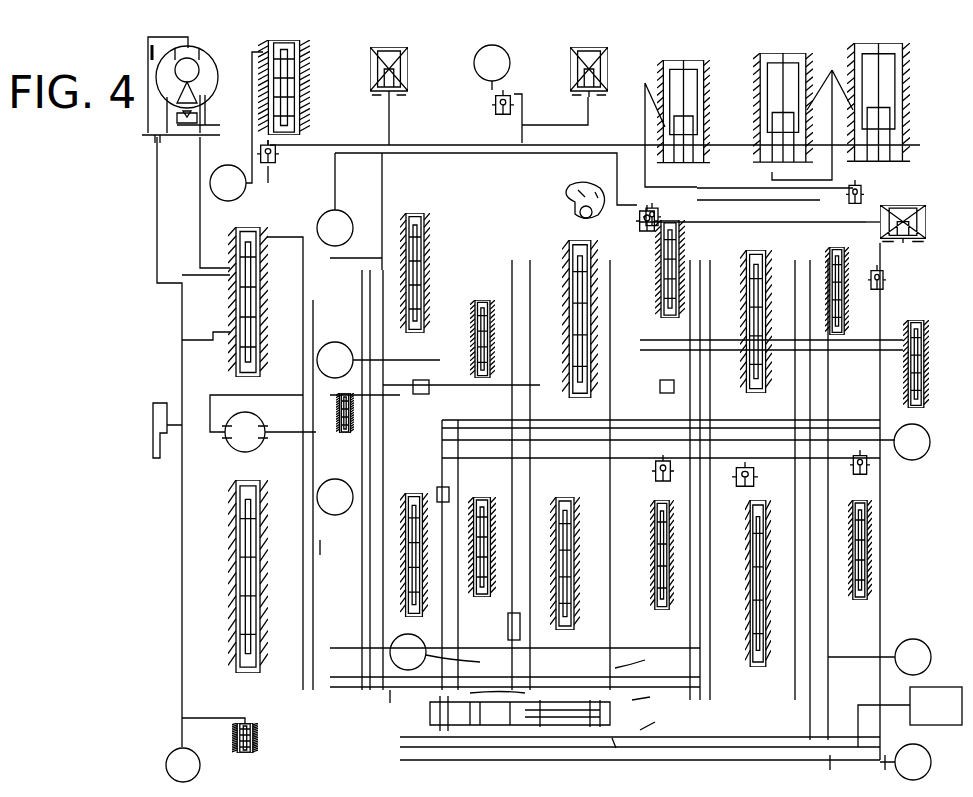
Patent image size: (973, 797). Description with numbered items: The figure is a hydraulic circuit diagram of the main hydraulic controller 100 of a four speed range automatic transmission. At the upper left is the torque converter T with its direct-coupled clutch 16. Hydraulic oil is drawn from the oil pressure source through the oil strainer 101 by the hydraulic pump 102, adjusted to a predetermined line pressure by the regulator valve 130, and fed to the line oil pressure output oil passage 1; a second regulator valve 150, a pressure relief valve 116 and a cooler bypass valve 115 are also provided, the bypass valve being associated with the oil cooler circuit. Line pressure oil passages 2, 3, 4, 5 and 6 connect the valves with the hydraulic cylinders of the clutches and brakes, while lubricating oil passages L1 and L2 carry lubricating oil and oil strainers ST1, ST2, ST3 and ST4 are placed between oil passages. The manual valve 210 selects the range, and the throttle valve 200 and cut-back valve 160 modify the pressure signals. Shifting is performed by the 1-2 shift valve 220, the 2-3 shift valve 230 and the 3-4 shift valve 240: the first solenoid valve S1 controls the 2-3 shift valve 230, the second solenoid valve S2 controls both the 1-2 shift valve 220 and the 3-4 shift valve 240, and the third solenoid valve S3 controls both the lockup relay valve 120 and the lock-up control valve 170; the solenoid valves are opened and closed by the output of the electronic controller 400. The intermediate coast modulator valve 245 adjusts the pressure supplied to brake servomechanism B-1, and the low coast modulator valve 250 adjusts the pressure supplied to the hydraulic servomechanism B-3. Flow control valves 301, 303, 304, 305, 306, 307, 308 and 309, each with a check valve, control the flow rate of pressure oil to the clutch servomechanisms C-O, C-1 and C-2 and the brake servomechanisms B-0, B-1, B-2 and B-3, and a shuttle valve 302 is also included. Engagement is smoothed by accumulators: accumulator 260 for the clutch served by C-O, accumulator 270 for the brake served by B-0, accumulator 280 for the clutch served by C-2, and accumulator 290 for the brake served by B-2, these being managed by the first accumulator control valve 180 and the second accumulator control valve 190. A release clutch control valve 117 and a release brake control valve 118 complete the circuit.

The direct-coupled clutch 16 is at (151, 53).
The torque converter T is at (212, 58).
The main hydraulic controller 100 is at (147, 143).
The accumulator 260 is at (310, 76).
The third solenoid valve S3 is at (410, 55).
The hydraulic servomechanism B-1 is at (492, 67).
The flow control valve 307 is at (515, 106).
The first solenoid valve S1 is at (608, 55).
The accumulator 270 is at (722, 60).
The accumulator 280 is at (810, 72).
The accumulator 290 is at (903, 72).
The flow control valve 306 is at (655, 207).
The flow control valve 304 is at (864, 193).
The second solenoid valve S2 is at (927, 222).
The flow control valve 301 is at (279, 155).
The hydraulic servomechanism C-O is at (228, 183).
The lockup relay valve 120 is at (268, 228).
The hydraulic servomechanism B-0 is at (335, 228).
The second regulator valve 150 is at (428, 224).
The cut-back valve 160 is at (484, 296).
The throttle valve 200 is at (562, 252).
The flow control valve 305 is at (606, 268).
The 3-4 shift valve 240 is at (678, 232).
The 2-3 shift valve 230 is at (744, 255).
The intermediate coast modulator valve 245 is at (833, 251).
The flow control valve 309 is at (886, 279).
The low coast modulator valve 250 is at (924, 332).
The lubricating oil passage L1 is at (335, 360).
The oil strainer ST4 is at (427, 398).
The oil strainer ST2 is at (672, 398).
The hydraulic servomechanism B-2 is at (912, 442).
The hydraulic pump 102 is at (245, 432).
The oil strainer 101 is at (160, 460).
The pressure relief valve 116 is at (326, 420).
The hydraulic servomechanism C-2 is at (335, 497).
The lock-up control valve 170 is at (402, 508).
The oil strainer ST3 is at (465, 483).
The flow control valve 303 is at (662, 485).
The shuttle valve 302 is at (758, 475).
The flow control valve 308 is at (870, 465).
The first accumulator control valve 180 is at (484, 600).
The second accumulator control valve 190 is at (560, 600).
The release brake control valve 118 is at (660, 612).
The release clutch control valve 117 is at (872, 580).
The hydraulic servomechanism C-1 is at (435, 652).
The oil strainer ST1 is at (492, 663).
The regulator valve 130 is at (230, 652).
The cooler bypass valve 115 is at (260, 738).
The manual valve 210 is at (510, 728).
The 1-2 shift valve 220 is at (770, 662).
The hydraulic servomechanism B-3 is at (879, 657).
The electronic controller 400 is at (910, 717).
The lubricating oil passage L2 is at (880, 762).
The line oil pressure output oil passage 1 is at (358, 623).
The line oil pressure oil passage 2 is at (637, 657).
The line oil pressure oil passage 3 is at (654, 718).
The line oil pressure oil passage 4 is at (648, 695).
The line oil pressure oil passage 5 is at (491, 695).
The line oil pressure oil passage 6 is at (616, 754).